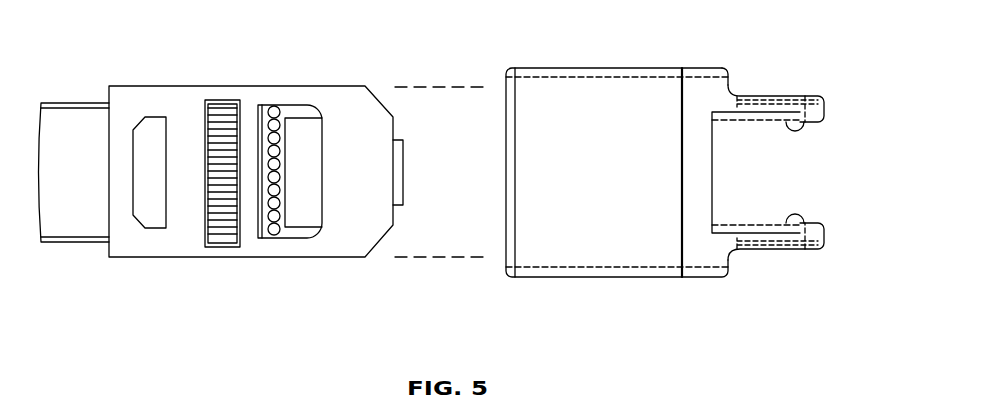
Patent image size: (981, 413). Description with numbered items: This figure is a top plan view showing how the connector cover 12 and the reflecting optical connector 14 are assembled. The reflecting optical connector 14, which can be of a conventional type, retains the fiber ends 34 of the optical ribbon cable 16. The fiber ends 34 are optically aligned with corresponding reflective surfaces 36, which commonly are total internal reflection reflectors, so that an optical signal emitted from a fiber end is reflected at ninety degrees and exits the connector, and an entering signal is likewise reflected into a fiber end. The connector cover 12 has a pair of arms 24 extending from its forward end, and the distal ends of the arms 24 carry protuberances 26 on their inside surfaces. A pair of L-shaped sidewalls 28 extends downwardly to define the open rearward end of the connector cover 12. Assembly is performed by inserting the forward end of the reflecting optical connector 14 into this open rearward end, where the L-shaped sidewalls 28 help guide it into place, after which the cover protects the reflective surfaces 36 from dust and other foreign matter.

The connector cover 12 is at (665, 199).
The reflecting optical connector 14 is at (232, 293).
The optical ribbon cable 16 is at (78, 244).
The arms 24 is at (823, 95).
The protuberances 26 is at (793, 132).
The L-shaped sidewalls 28 is at (536, 68).
The fiber ends 34 is at (221, 118).
The reflective surfaces 36 is at (278, 108).